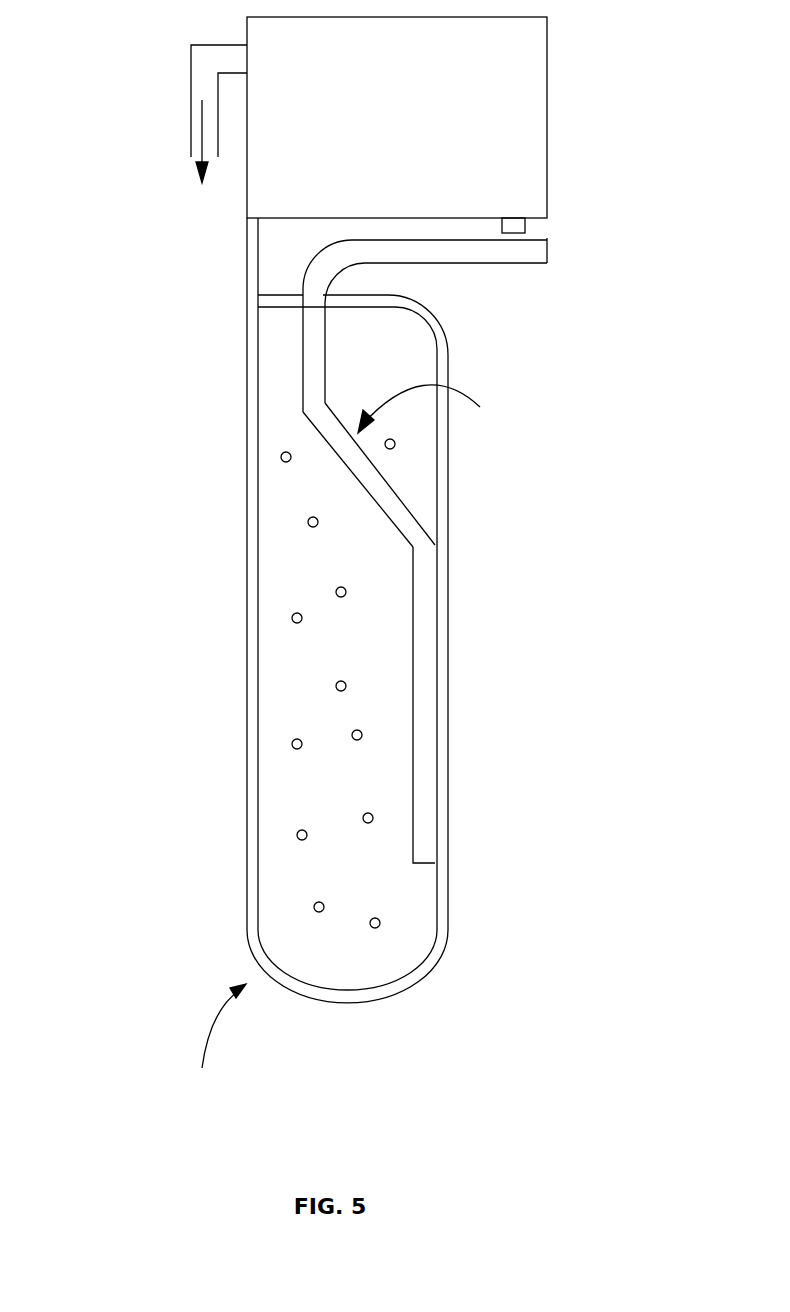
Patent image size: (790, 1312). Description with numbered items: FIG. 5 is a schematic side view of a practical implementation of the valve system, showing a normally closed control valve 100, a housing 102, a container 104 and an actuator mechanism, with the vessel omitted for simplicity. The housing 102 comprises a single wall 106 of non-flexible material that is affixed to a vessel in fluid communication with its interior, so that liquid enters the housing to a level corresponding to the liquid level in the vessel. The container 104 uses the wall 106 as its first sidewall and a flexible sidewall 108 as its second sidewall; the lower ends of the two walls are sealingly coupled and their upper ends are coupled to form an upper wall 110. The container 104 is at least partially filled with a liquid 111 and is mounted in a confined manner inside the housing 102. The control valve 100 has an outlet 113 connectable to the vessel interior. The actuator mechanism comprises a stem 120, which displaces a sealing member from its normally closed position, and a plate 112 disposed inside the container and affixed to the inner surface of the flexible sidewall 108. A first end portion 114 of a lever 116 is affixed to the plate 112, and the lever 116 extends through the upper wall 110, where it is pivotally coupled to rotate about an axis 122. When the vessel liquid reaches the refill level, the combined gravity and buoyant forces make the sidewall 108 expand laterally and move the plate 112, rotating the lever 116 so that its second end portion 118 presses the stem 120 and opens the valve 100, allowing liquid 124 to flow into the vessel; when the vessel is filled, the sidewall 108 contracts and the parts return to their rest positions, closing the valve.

The control valve 100 is at (497, 85).
The housing 102 is at (253, 233).
The container 104 is at (216, 1041).
The wall 106 is at (253, 473).
The flexible sidewall 108 is at (442, 485).
The upper wall 110 is at (362, 295).
The liquid 111 is at (292, 645).
The plate 112 is at (423, 690).
The outlet 113 is at (190, 58).
The first end portion 114 is at (425, 557).
The lever 116 is at (435, 409).
The second end portion 118 is at (527, 252).
The stem 120 is at (520, 223).
The axis 122 is at (320, 303).
The liquid 124 is at (197, 140).